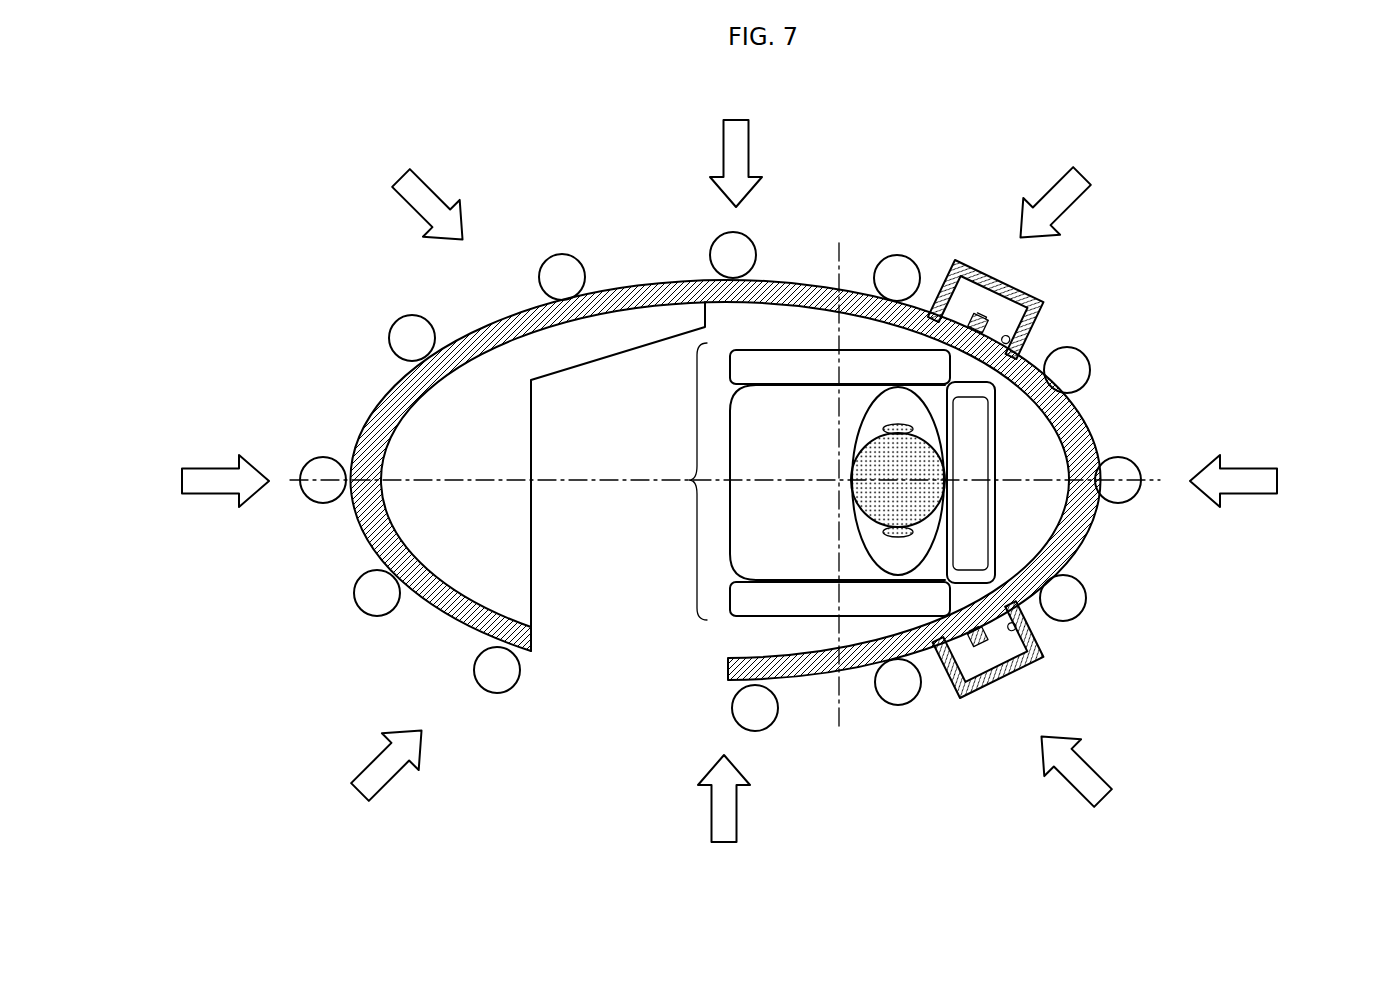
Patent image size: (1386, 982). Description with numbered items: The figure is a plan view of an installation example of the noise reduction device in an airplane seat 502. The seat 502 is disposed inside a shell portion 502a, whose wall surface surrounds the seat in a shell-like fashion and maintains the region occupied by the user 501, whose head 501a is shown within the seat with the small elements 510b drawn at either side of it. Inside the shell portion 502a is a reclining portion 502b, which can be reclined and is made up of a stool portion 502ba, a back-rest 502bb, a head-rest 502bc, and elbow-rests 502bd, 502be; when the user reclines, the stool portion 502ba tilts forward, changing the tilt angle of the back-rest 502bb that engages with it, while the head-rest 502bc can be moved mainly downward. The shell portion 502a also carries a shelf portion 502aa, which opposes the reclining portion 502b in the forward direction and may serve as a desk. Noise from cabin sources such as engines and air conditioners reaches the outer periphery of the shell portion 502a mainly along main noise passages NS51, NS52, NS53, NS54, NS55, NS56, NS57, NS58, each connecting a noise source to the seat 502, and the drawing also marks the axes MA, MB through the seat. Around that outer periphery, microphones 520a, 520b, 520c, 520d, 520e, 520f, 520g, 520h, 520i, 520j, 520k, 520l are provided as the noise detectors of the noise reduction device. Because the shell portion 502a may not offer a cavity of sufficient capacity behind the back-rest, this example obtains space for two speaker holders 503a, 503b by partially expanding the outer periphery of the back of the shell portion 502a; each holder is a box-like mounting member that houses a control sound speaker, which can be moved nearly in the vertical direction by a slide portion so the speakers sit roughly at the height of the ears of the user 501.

The seat 502 is at (806, 280).
The shell portion 502a is at (578, 476).
The shelf portion 502aa is at (512, 560).
The reclining portion 502b is at (896, 518).
The stool portion 502ba is at (743, 539).
The back-rest 502bb is at (973, 545).
The head-rest 502bc is at (972, 442).
The elbow-rest 502bd is at (744, 603).
The elbow-rest 502be is at (738, 363).
The user 501 is at (851, 481).
The head 501a is at (872, 488).
The sensor terminals 510b is at (887, 428).
The speaker holder 503a is at (1045, 712).
The speaker holder 503b is at (1034, 242).
The microphone 520a is at (767, 717).
The microphone 520b is at (907, 693).
The microphone 520c is at (1078, 605).
The microphone 520d is at (1133, 493).
The microphone 520e is at (1072, 365).
The microphone 520f is at (902, 258).
The microphone 520g is at (720, 243).
The microphone 520h is at (556, 262).
The microphone 520i is at (402, 325).
The microphone 520j is at (315, 462).
The microphone 520k is at (365, 593).
The microphone 520l is at (505, 680).
The main noise passage NS51 is at (719, 815).
The main noise passage NS52 is at (1100, 769).
The main noise passage NS53 is at (1272, 481).
The main noise passage NS54 is at (1061, 198).
The main noise passage NS55 is at (735, 147).
The main noise passage NS56 is at (427, 198).
The main noise passage NS57 is at (187, 481).
The main noise passage NS58 is at (384, 772).
The axis A MA is at (224, 733).
The axis B MB is at (1249, 290).